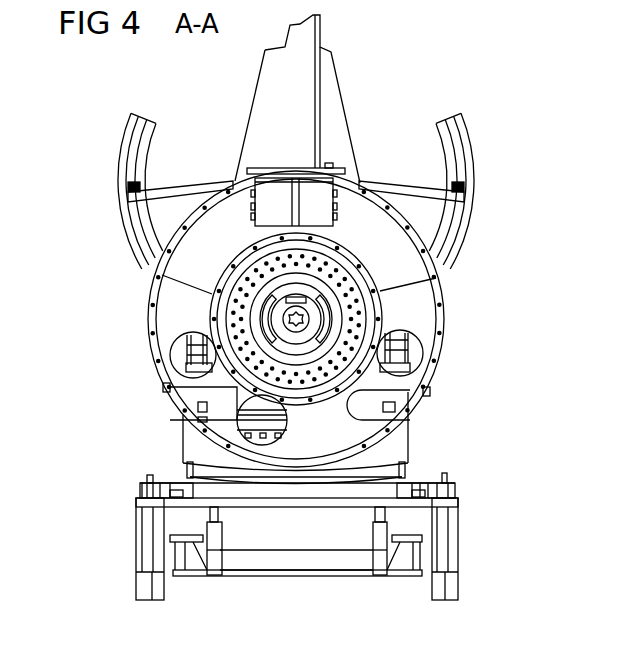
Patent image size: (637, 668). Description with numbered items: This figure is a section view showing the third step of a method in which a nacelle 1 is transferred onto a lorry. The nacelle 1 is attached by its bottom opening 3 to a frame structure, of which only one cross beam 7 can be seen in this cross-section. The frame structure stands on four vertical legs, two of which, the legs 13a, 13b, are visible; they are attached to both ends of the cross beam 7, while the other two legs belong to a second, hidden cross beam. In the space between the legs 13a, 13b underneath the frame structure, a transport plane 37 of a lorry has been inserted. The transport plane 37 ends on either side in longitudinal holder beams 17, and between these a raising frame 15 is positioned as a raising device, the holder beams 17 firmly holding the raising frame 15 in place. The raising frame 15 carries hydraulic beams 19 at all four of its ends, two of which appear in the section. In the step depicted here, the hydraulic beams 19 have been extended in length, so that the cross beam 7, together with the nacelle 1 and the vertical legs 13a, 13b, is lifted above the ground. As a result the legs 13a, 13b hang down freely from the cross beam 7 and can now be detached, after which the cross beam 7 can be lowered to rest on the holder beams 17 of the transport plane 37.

The nacelle 1 is at (446, 304).
The bottom opening 3 is at (400, 443).
The cross beam 7 is at (325, 497).
The leg 13a is at (136, 545).
The leg 13b is at (452, 550).
The raising frame 15 is at (318, 560).
The holder beam 17 is at (187, 532).
The hydraulic beam 19 is at (217, 532).
The transport plane 37 is at (297, 575).